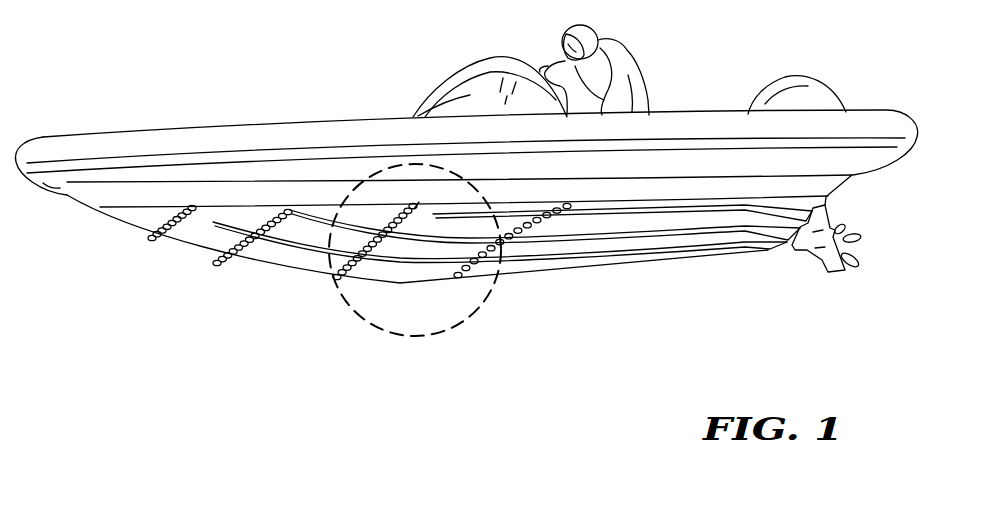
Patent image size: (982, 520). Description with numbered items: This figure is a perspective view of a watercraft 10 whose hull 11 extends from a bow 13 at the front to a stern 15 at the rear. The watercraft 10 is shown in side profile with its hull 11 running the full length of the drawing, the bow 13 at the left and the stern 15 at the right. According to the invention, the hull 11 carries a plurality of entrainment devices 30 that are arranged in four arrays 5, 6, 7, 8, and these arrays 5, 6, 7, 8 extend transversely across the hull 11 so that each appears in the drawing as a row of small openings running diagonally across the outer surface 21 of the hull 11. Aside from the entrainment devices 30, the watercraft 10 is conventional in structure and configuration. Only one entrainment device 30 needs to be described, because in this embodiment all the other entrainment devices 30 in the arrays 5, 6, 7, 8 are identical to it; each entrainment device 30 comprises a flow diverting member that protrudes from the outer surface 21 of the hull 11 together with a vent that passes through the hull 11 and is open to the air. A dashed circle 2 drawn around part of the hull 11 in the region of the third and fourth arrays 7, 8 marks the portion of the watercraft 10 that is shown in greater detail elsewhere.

The watercraft 10 is at (766, 344).
The bow 13 is at (53, 147).
The stern 15 is at (874, 117).
The outer surface 21 is at (605, 228).
The hull 11 is at (679, 207).
The first array 5 is at (173, 235).
The second array 6 is at (249, 256).
The third array 7 is at (356, 270).
The fourth array 8 is at (451, 288).
The entrainment device 30 is at (426, 196).
The detail region of hull 2 is at (413, 339).